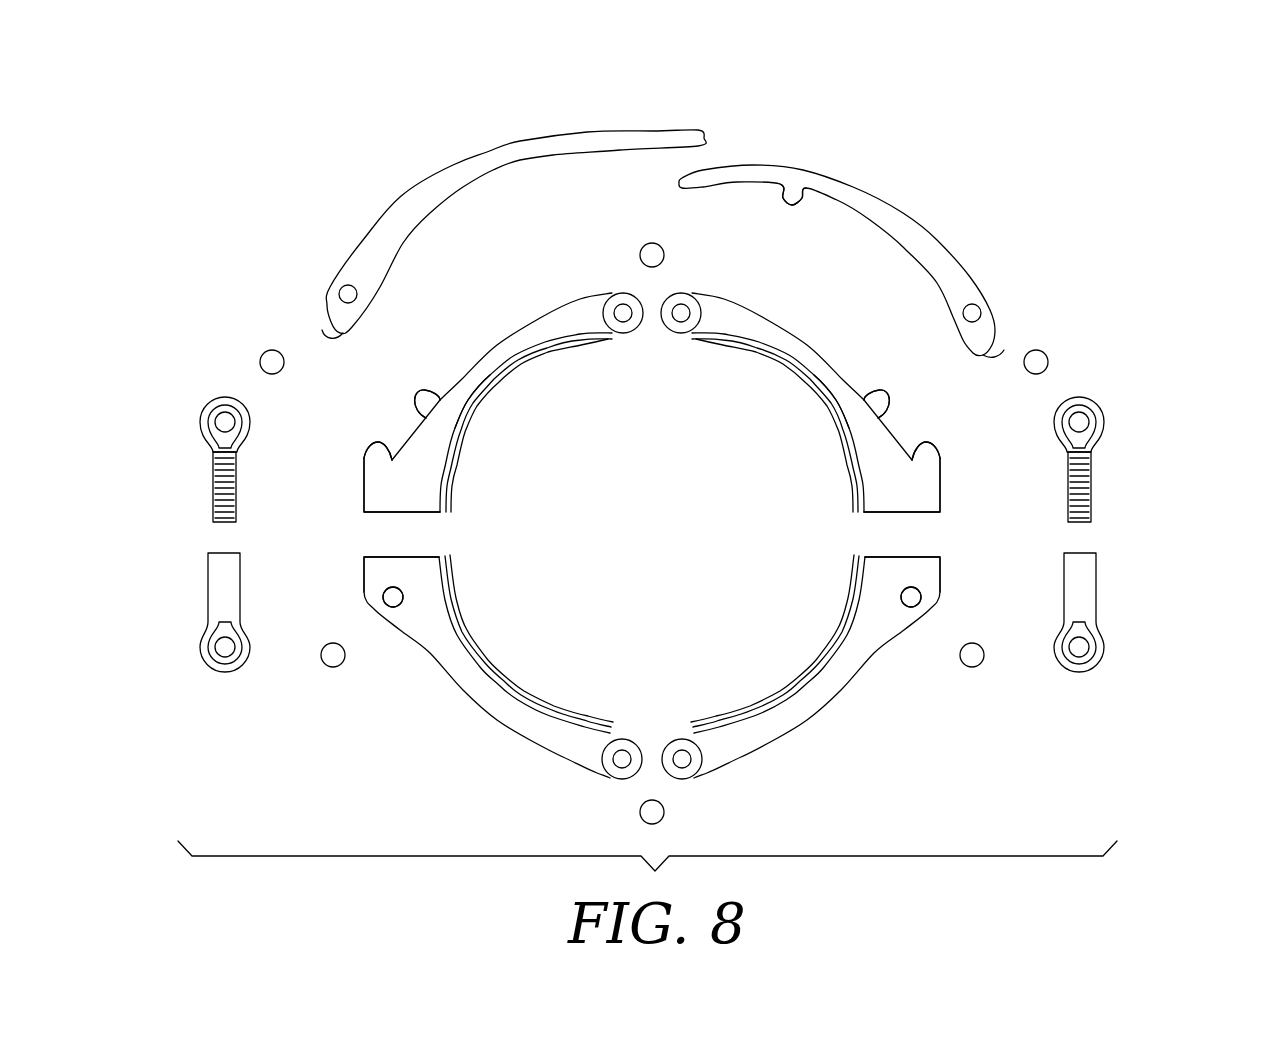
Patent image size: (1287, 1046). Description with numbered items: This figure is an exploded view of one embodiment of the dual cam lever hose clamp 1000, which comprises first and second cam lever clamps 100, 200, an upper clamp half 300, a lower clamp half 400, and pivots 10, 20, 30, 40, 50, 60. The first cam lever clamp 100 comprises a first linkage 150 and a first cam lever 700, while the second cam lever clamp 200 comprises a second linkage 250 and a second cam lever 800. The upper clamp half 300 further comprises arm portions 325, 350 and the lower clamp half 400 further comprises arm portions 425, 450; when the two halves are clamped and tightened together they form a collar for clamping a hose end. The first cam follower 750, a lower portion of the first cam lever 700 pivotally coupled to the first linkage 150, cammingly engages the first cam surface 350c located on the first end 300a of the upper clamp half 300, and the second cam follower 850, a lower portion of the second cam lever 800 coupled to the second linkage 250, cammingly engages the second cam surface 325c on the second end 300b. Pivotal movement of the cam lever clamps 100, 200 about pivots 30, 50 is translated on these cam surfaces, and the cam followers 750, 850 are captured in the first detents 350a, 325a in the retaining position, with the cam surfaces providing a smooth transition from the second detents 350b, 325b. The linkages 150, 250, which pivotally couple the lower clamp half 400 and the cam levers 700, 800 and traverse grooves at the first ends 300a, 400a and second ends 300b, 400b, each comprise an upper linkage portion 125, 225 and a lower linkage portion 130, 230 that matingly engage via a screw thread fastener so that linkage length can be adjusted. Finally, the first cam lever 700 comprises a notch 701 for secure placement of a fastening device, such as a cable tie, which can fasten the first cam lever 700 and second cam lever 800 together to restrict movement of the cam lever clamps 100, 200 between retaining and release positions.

The dual cam lever hose clamp 1000 is at (989, 104).
The first cam lever clamp 100 is at (1045, 285).
The second cam lever clamp 200 is at (273, 247).
The first cam lever 700 is at (896, 209).
The notch 701 is at (801, 196).
The first cam follower 750 is at (1000, 352).
The second cam lever 800 is at (445, 168).
The second cam follower 850 is at (323, 327).
The pivot 10 is at (640, 255).
The pivot 20 is at (665, 812).
The pivot 30 is at (260, 362).
The pivot 40 is at (333, 667).
The pivot 50 is at (1048, 362).
The pivot 60 is at (972, 667).
The upper clamp half 300 is at (669, 382).
The first end of upper clamp half 300a is at (940, 496).
The second end of upper clamp half 300b is at (364, 496).
The arm portion 325 is at (478, 364).
The first detent 325a is at (364, 448).
The second detent 325b is at (478, 408).
The second cam surface 325c is at (417, 413).
The arm portion 350 is at (828, 364).
The first detent 350a is at (940, 448).
The second detent 350b is at (826, 408).
The first cam surface 350c is at (887, 413).
The lower clamp half 400 is at (630, 691).
The first end of lower clamp half 400a is at (940, 560).
The second end of lower clamp half 400b is at (364, 560).
The arm portion 425 is at (456, 692).
The arm portion 450 is at (848, 692).
The upper linkage portion 125 is at (1091, 434).
The lower linkage portion 130 is at (1092, 633).
The first linkage 150 is at (1126, 506).
The upper linkage portion 225 is at (213, 434).
The lower linkage portion 230 is at (212, 633).
The second linkage 250 is at (178, 506).